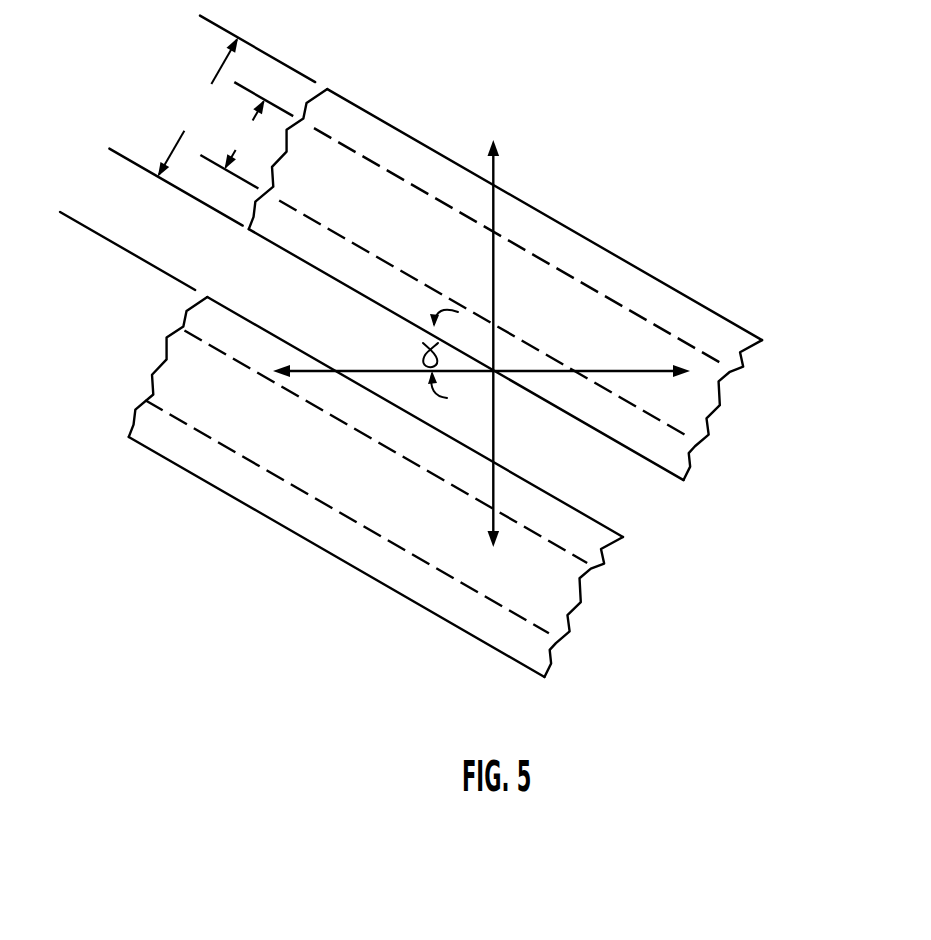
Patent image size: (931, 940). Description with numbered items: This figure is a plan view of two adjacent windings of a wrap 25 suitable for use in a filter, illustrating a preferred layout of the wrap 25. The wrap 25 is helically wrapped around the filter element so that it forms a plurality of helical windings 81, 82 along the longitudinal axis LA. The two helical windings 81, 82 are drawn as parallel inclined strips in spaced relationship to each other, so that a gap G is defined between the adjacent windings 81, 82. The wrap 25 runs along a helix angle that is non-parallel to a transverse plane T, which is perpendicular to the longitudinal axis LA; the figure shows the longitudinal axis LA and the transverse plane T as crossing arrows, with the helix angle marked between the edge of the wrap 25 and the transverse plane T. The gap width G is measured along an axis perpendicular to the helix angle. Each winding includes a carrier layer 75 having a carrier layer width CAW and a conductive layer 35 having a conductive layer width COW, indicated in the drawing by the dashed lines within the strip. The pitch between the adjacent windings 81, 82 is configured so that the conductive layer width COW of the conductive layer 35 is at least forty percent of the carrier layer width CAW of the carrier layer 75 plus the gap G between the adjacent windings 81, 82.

The wrap 25 is at (436, 245).
The conductive layer 35 is at (413, 197).
The carrier layer 75 is at (390, 139).
The helical winding 81 is at (680, 307).
The helical winding 82 is at (563, 522).
The gap G is at (214, 200).
The carrier layer width CAW is at (198, 107).
The conductive layer width COW is at (244, 134).
The longitudinal axis LA is at (495, 168).
The transverse plane T is at (517, 372).